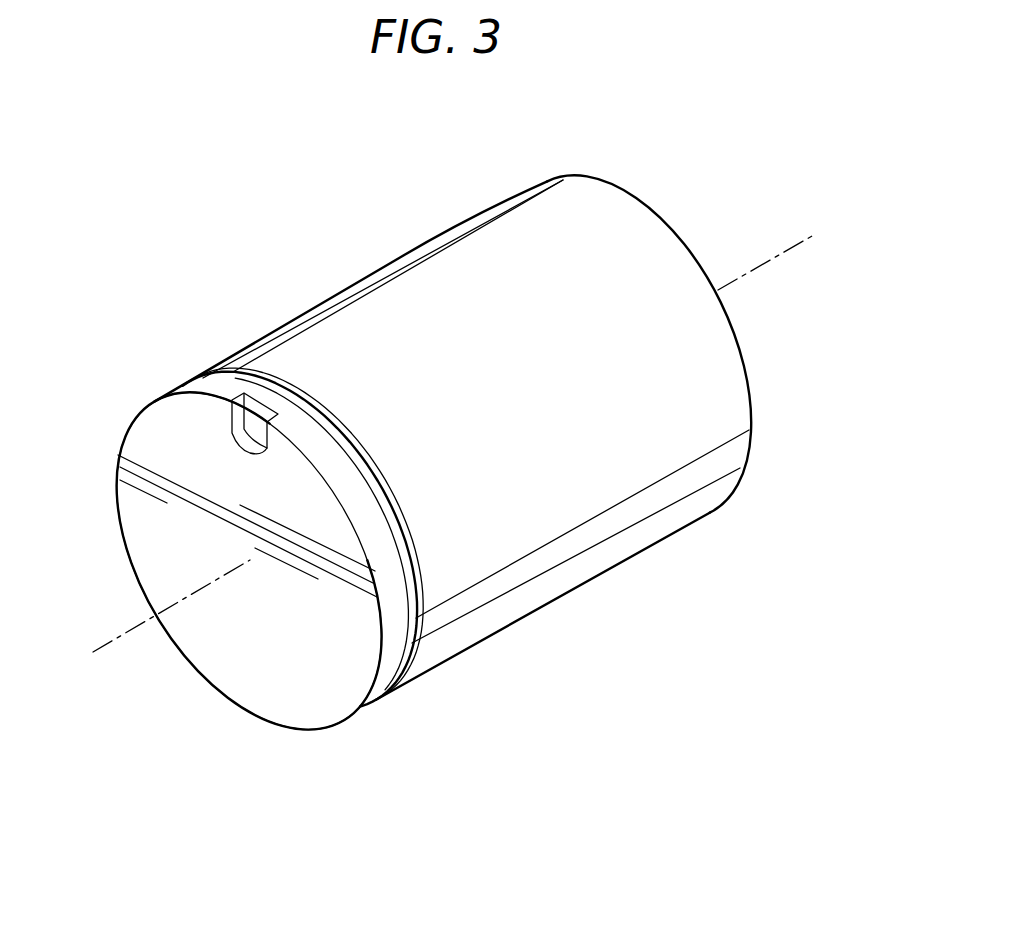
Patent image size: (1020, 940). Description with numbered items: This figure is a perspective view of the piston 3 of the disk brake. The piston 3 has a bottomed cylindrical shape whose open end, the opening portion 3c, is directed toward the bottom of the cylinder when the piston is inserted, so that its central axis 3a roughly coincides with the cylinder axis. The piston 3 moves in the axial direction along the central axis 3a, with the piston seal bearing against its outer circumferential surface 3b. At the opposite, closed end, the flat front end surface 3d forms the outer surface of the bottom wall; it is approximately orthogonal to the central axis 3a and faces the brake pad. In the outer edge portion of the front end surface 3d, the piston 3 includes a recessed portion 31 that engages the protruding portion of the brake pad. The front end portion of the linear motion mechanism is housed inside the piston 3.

The piston 3 is at (183, 206).
The central axis 3a is at (112, 638).
The outer circumferential surface 3b is at (458, 312).
The opening portion 3c is at (654, 215).
The front end surface 3d is at (268, 657).
The recessed portion 31 is at (230, 433).